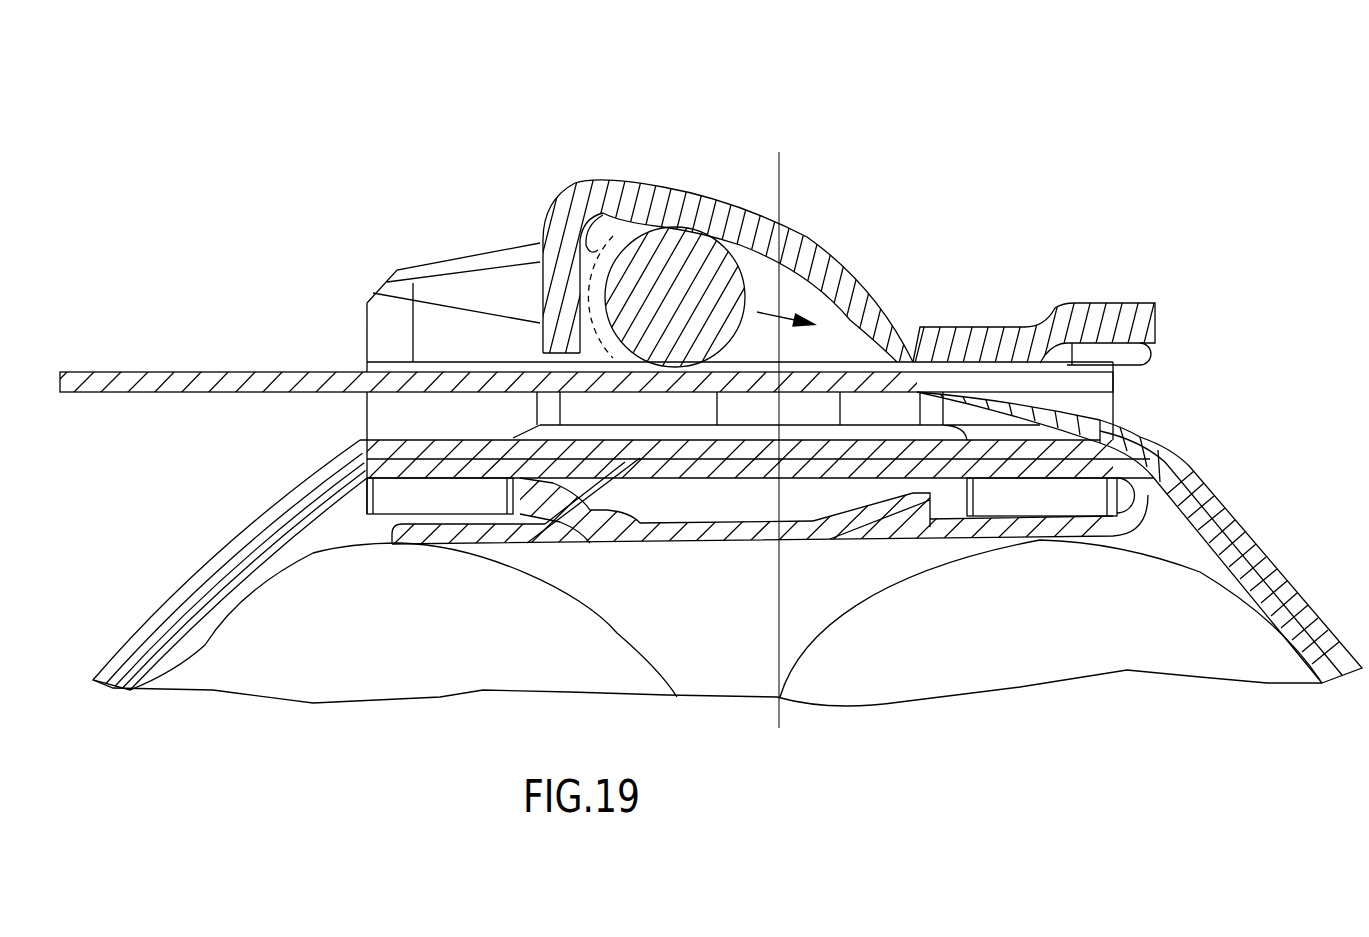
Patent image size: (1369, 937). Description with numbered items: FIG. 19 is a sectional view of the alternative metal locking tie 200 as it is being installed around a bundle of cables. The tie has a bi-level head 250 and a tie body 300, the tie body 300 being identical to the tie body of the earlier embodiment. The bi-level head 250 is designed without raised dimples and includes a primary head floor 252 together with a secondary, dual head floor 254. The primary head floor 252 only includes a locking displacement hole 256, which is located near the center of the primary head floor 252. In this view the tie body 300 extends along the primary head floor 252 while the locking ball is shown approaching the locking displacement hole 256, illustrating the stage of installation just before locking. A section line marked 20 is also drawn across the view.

The alternative metal locking tie 200 is at (373, 155).
The bi-level head 250 is at (620, 178).
The primary head floor 252 is at (890, 410).
The secondary, dual head floor 254 is at (1105, 496).
The locking displacement hole 256 is at (807, 410).
The tie body 300 is at (197, 563).
The section line 20- 20 is at (738, 728).